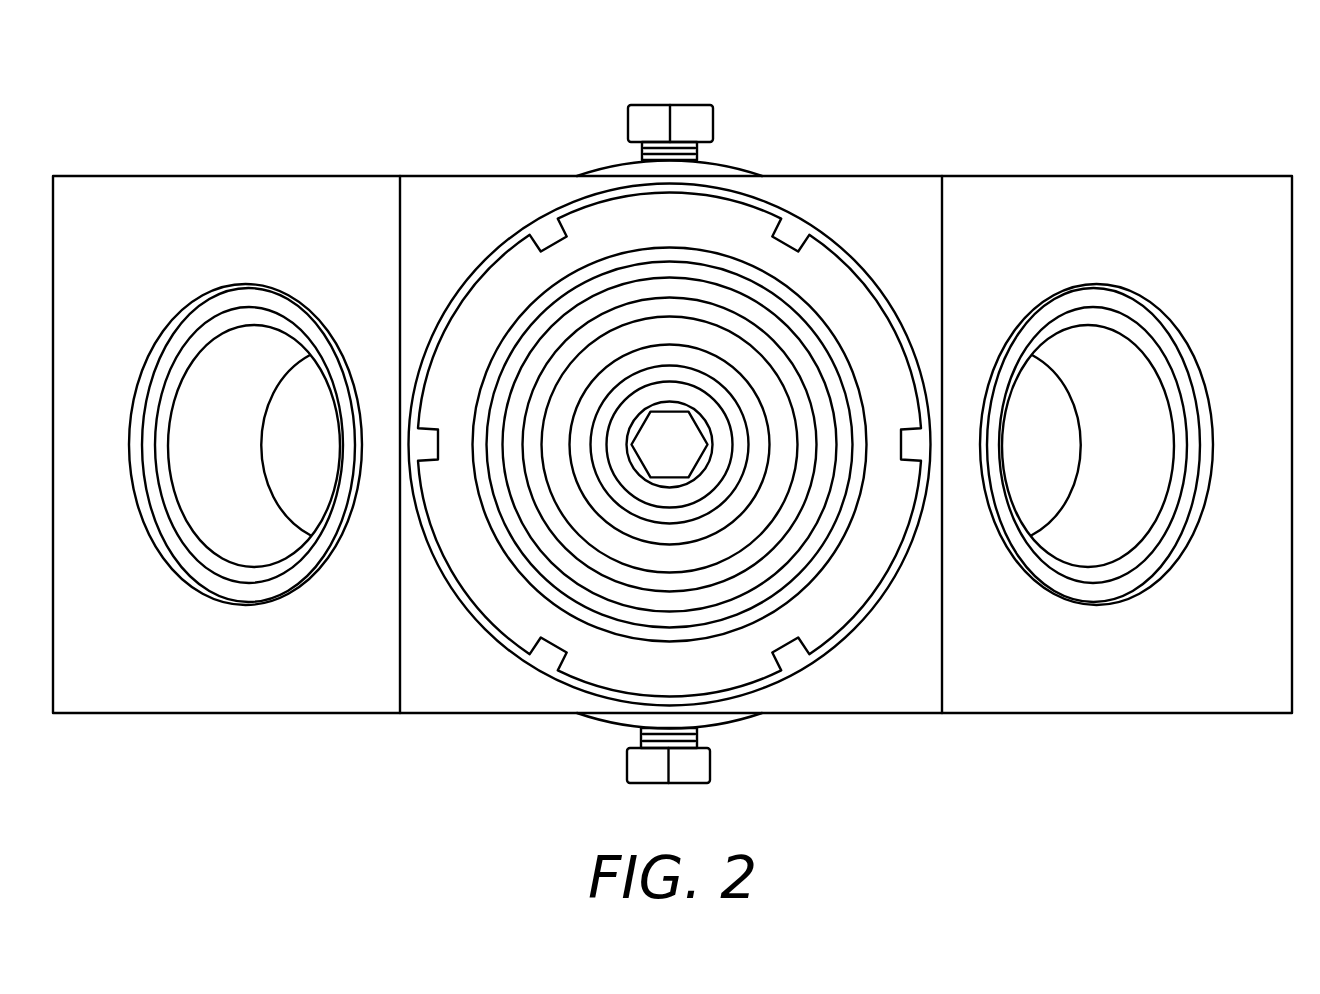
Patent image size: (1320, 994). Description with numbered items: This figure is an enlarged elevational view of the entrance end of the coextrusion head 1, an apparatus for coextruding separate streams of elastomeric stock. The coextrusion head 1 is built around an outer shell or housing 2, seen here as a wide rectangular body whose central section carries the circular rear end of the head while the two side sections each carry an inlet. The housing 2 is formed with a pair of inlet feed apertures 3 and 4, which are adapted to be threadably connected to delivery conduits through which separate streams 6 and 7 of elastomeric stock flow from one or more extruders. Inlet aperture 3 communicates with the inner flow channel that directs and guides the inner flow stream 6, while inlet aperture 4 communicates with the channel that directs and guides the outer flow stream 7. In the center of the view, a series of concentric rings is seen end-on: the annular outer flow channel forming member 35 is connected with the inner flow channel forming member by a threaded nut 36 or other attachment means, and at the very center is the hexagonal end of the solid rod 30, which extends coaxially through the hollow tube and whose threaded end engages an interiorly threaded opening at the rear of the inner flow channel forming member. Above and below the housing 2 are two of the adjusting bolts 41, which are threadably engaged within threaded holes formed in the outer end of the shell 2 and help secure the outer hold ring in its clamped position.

The coextrusion head 1 is at (893, 108).
The outer shell or housing 2 is at (455, 218).
The inlet feed aperture 3 is at (1150, 487).
The inlet feed aperture 4 is at (212, 525).
The inner flow stream 6 is at (1118, 345).
The outer flow stream 7 is at (242, 352).
The solid rod 30 is at (662, 462).
The annular outer flow channel forming member 35 is at (478, 445).
The threaded nut 36 is at (848, 308).
The adjusting bolts 41 is at (686, 122).